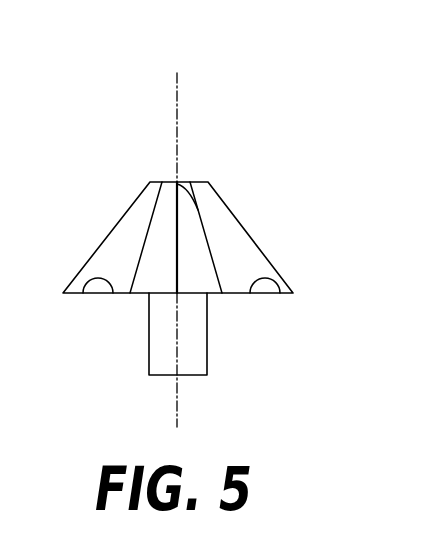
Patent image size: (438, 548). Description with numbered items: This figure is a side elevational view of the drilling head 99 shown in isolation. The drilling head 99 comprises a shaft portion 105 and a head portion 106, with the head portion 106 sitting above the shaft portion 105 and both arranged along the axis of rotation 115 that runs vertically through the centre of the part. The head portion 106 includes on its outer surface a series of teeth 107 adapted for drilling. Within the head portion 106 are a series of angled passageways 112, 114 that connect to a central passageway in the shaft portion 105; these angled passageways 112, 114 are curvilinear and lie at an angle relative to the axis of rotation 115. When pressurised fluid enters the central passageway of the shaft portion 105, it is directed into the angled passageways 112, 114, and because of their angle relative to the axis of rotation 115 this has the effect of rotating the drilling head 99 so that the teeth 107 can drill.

The drilling head 99 is at (288, 101).
The shaft portion 105 is at (196, 351).
The head portion 106 is at (220, 215).
The teeth 107 is at (177, 223).
The angled passageway 112 is at (94, 291).
The angled passageway 114 is at (263, 294).
The axis of rotation 115 is at (177, 118).